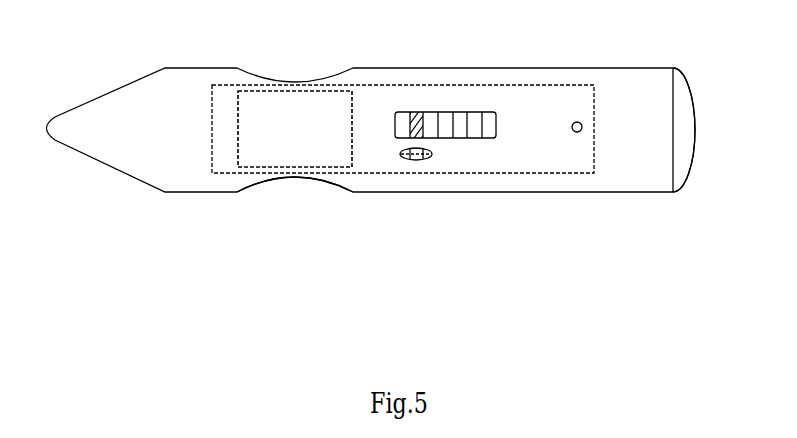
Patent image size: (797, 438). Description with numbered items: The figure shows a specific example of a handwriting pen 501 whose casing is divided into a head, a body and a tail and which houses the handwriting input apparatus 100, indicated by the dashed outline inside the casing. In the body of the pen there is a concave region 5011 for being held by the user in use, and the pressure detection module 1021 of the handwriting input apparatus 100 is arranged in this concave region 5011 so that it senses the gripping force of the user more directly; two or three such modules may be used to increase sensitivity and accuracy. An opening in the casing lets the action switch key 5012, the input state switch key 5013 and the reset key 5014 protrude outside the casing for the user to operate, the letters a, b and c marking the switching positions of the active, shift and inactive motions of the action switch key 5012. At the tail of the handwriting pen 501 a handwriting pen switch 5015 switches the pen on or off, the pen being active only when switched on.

The handwriting pen 501 is at (371, 100).
The handwriting input apparatus 100 is at (405, 99).
The pressure detection module 1021 is at (295, 98).
The concave region 5011 is at (295, 209).
The action switch key 5012 is at (487, 140).
The input state switch key 5013 is at (425, 160).
The reset key 5014 is at (613, 98).
The handwriting pen switch 5015 is at (707, 107).